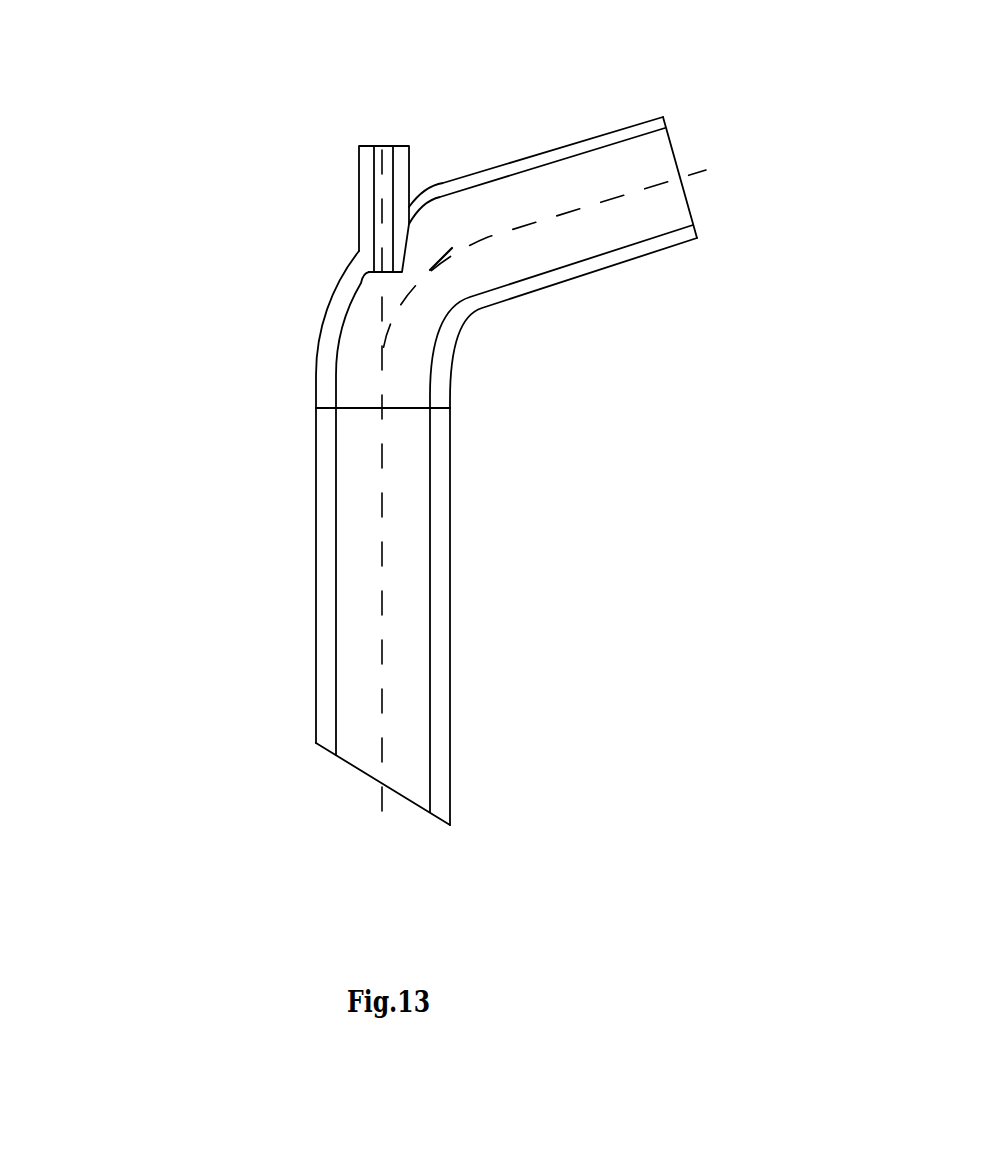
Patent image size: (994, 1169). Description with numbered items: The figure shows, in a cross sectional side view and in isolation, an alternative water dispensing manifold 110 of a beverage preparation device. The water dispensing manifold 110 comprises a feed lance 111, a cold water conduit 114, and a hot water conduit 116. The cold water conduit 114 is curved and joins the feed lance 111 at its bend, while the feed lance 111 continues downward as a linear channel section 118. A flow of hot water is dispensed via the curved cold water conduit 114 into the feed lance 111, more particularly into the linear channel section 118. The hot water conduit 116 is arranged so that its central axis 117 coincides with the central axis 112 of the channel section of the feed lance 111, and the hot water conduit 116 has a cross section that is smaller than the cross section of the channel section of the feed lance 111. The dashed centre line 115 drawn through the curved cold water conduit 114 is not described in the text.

The water dispensing manifold 110 is at (110, 125).
The feed lance 111 is at (272, 523).
The central axis 112 is at (385, 558).
The cold water conduit 114 is at (540, 333).
The bent center line 115 is at (428, 268).
The hot water conduit 116 is at (338, 195).
The central axis 117 is at (384, 192).
The linear channel section 118 is at (455, 637).